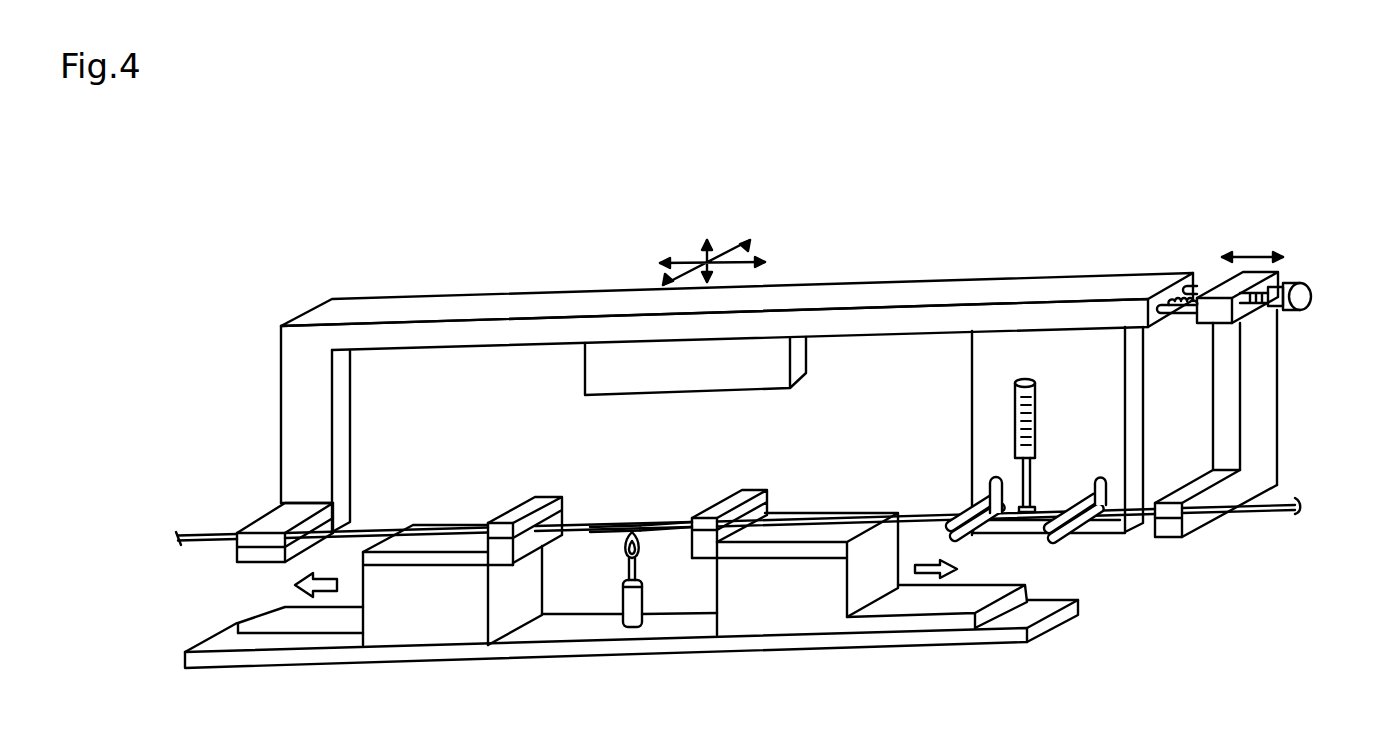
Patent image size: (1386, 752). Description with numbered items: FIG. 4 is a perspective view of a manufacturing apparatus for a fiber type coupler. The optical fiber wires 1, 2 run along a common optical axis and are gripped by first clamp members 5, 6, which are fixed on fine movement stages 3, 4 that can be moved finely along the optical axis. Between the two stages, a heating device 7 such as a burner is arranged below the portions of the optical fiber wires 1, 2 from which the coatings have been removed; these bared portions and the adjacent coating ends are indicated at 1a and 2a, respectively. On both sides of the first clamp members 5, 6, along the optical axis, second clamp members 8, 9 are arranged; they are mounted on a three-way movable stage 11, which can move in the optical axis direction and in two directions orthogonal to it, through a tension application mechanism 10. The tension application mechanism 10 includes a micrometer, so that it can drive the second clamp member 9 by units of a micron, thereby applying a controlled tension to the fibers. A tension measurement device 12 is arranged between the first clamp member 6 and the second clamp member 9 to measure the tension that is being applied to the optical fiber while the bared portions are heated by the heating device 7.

The optical fiber wire 1 is at (210, 537).
The heated portion of wire 1a is at (602, 528).
The optical fiber wire 2 is at (195, 543).
The coating end portion 2a is at (657, 525).
The fine movement stage 3 is at (437, 627).
The fine movement stage 4 is at (795, 625).
The first clamp member 5 is at (523, 510).
The first clamp member 6 is at (725, 495).
The heating device 7 is at (640, 592).
The second clamp member 8 is at (270, 517).
The second clamp member 9 is at (1192, 525).
The tension application mechanism 10 is at (1283, 287).
The 3-way movable stage 11 is at (1017, 292).
The tension measurement device 12 is at (1015, 415).